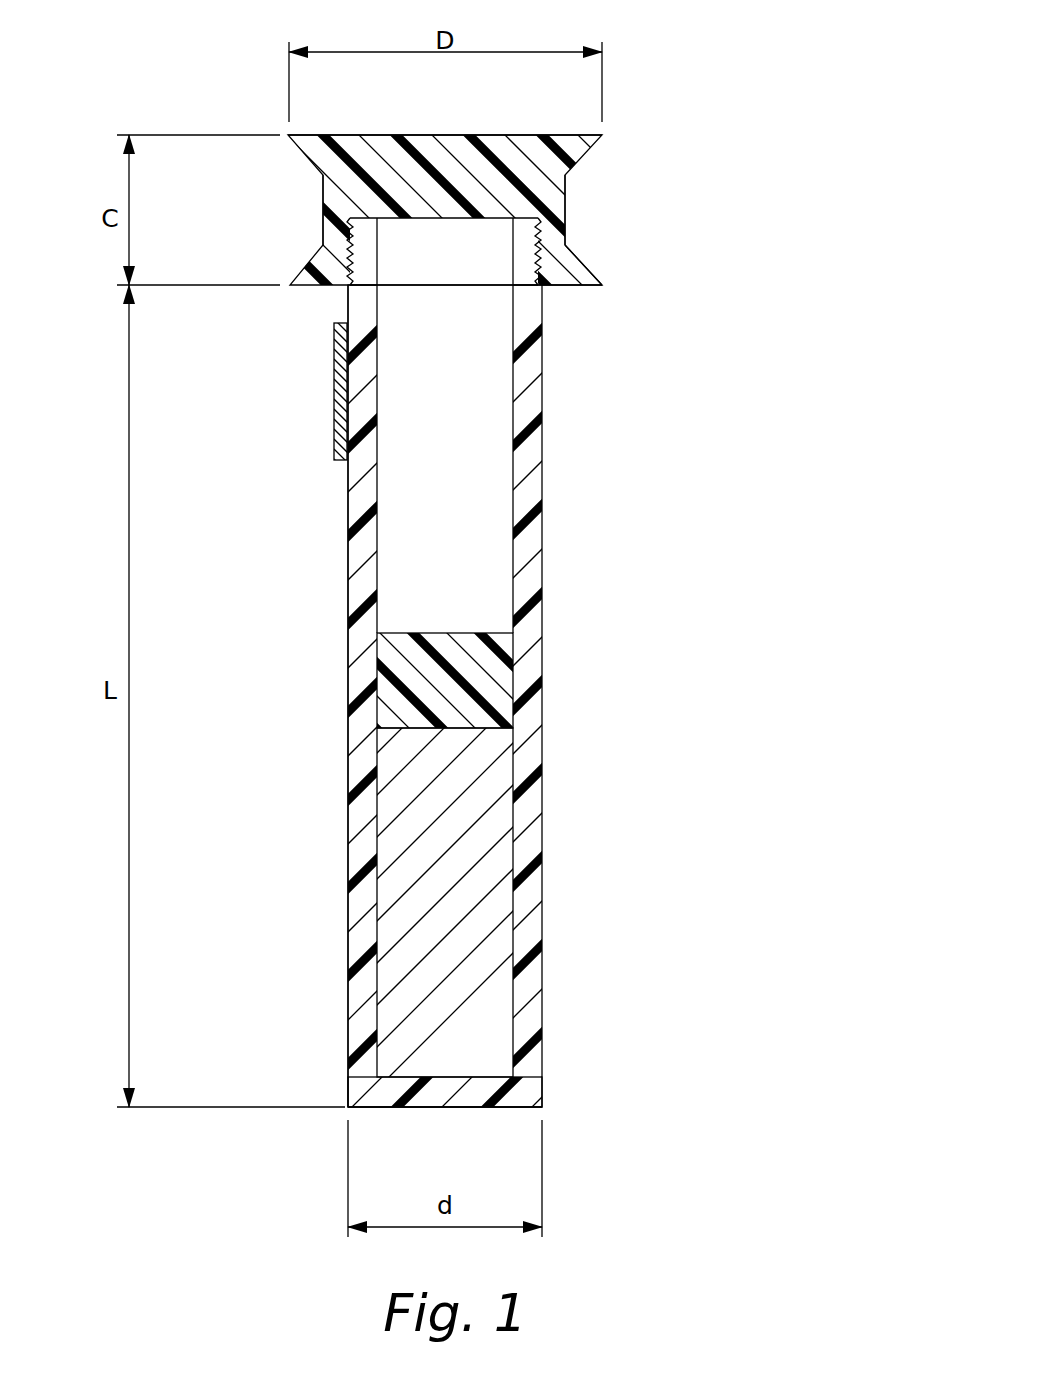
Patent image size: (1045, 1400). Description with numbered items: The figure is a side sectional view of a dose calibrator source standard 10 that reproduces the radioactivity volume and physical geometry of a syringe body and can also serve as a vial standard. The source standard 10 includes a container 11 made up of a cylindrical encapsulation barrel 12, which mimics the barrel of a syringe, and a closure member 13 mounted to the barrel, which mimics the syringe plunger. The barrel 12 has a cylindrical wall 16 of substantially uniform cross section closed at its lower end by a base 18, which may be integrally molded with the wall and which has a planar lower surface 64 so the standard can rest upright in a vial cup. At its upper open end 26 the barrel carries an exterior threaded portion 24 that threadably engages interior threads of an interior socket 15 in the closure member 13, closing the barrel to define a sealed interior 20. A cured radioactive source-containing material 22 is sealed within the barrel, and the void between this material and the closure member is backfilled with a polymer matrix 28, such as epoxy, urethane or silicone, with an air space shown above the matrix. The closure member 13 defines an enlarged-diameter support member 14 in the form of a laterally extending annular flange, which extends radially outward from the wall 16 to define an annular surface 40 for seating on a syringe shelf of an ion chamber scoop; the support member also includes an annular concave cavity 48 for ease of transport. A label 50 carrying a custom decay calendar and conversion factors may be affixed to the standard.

The dose calibrator source standard 10 is at (677, 95).
The container 11 is at (259, 113).
The encapsulation barrel 12 is at (547, 936).
The closure member 13 is at (569, 200).
The support member 14 is at (580, 270).
The interior socket 15 is at (536, 222).
The cylindrical wall 16 is at (348, 568).
The base 18 is at (445, 1090).
The sealed interior 20 is at (451, 473).
The radioactive source-containing material 22 is at (445, 847).
The exterior threaded portion 24 is at (345, 250).
The upper open end 26 is at (430, 217).
The polymer matrix 28 is at (480, 680).
The annular surface 40 is at (572, 290).
The annular concave cavity 48 is at (323, 198).
The label 50 is at (333, 396).
The planar lower surface 64 is at (418, 1107).